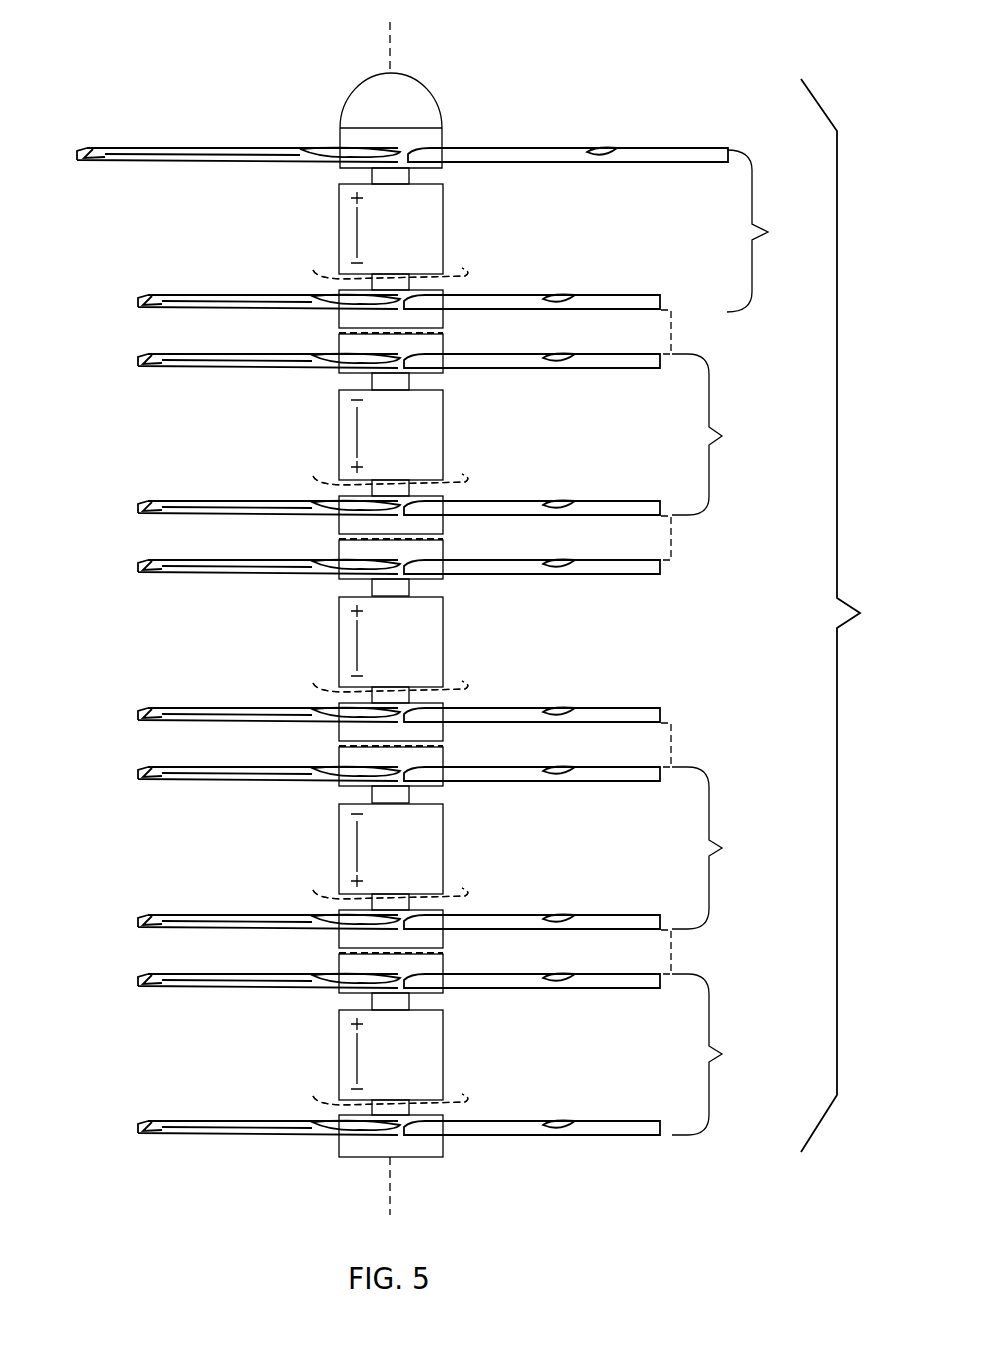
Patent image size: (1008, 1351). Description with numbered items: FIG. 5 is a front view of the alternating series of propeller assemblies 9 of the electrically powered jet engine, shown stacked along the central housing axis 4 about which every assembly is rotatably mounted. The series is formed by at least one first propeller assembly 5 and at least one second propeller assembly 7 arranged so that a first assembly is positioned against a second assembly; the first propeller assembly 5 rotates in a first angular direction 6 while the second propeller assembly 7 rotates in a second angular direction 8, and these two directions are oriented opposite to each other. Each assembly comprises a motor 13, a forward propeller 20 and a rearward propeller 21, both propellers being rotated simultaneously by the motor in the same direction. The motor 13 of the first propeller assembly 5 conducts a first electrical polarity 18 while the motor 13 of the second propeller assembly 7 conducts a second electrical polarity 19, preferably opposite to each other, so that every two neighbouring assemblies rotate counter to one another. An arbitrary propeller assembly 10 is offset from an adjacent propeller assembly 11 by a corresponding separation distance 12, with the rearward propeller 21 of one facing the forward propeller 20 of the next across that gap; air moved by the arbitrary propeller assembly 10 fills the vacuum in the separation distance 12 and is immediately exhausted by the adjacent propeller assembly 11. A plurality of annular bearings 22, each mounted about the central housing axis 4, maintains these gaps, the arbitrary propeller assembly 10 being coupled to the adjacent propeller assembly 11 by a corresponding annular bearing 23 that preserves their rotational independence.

The central housing axis 4 is at (390, 52).
The first propeller assembly 5 is at (120, 247).
The first angular direction 6 is at (457, 268).
The second propeller assembly 7 is at (120, 455).
The second angular direction 8 is at (328, 476).
The alternating series of propeller assemblies 9 is at (841, 615).
The arbitrary propeller assembly 10 is at (733, 539).
The adjacent propeller assembly 11 is at (712, 744).
The corresponding separation distance 12 is at (685, 642).
The motor 13 is at (451, 242).
The first electrical polarity 18 is at (358, 232).
The second electrical polarity 19 is at (358, 437).
The forward propeller 20 is at (700, 163).
The rearward propeller 21 is at (630, 296).
The plurality of annular bearings 22 is at (455, 345).
The corresponding annular bearing 23 is at (391, 643).